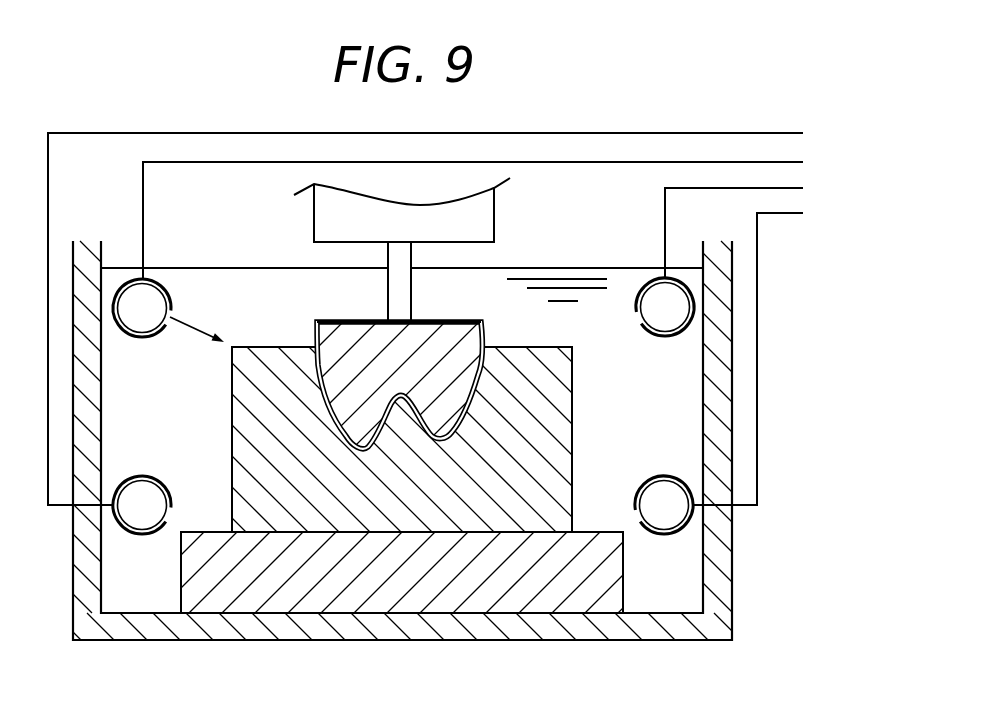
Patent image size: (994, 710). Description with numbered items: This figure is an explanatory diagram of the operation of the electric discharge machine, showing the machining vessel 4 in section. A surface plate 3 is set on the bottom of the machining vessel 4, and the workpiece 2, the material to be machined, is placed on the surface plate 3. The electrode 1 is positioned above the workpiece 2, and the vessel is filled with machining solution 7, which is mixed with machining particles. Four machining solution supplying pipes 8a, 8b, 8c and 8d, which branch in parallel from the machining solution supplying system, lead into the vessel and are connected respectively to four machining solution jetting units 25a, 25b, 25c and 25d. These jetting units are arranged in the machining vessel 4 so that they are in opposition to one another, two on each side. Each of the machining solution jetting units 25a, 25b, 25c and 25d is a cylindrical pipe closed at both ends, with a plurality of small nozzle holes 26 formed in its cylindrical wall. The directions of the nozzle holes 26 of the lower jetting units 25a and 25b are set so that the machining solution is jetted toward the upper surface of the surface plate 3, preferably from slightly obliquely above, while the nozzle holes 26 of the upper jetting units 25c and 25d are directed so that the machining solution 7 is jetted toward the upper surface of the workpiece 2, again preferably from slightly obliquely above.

The electrode 1 is at (470, 333).
The workpiece 2 is at (567, 408).
The surface plate 3 is at (503, 605).
The machining vessel 4 is at (585, 622).
The machining solution 7 is at (596, 312).
The machining solution supplying pipe 8a is at (790, 213).
The machining solution supplying pipe 8b is at (777, 133).
The machining solution supplying pipe 8c is at (785, 188).
The machining solution supplying pipe 8d is at (785, 162).
The machining solution jetting unit 25a is at (665, 475).
The machining solution jetting unit 25b is at (155, 474).
The machining solution jetting unit 25c is at (662, 338).
The machining solution jetting unit 25d is at (142, 341).
The nozzle holes 26 is at (170, 317).